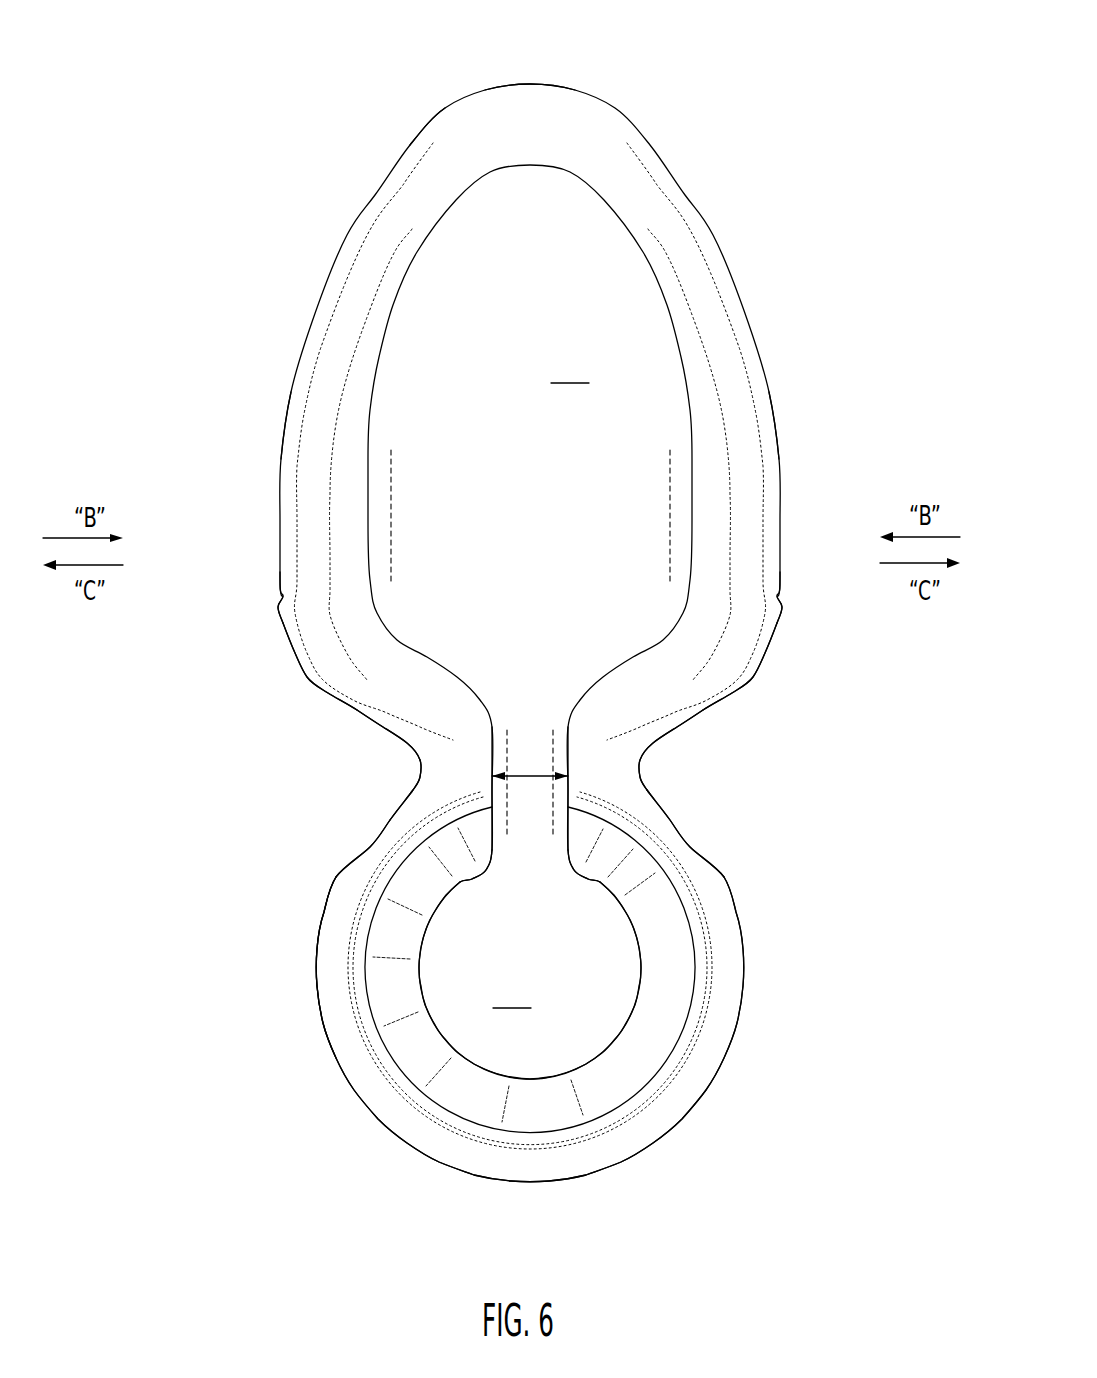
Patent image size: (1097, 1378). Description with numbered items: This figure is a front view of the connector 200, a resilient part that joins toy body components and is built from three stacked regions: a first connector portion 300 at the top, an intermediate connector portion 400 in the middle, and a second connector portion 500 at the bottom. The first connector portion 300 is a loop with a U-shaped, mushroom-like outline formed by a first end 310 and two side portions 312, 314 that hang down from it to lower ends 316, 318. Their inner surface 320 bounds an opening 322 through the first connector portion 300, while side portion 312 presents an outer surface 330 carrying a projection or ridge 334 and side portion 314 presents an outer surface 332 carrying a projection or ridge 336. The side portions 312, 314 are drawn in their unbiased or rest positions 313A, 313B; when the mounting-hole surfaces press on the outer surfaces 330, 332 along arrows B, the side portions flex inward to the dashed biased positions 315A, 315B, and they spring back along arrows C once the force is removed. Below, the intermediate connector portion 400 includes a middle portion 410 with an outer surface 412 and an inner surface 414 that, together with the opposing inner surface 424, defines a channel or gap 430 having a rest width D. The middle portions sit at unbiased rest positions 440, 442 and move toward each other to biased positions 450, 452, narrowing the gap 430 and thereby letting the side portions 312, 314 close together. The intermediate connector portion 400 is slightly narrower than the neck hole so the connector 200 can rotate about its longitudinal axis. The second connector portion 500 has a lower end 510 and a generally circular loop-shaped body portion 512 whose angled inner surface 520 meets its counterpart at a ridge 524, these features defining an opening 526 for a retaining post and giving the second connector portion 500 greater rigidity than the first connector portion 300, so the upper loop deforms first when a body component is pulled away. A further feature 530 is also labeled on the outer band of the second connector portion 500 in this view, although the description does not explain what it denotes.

The connector 200 is at (776, 104).
The first connector portion 300 is at (742, 280).
The first end 310 is at (563, 85).
The side portion 312 is at (303, 383).
The unbiased or rest position 313A is at (274, 414).
The unbiased or rest position 313B is at (792, 393).
The side portion 314 is at (765, 367).
The biased position 315A is at (405, 476).
The biased position 315B is at (658, 506).
The lower end 316 is at (323, 678).
The lower end 318 is at (690, 671).
The inner surface 320 is at (384, 347).
The opening 322 is at (570, 368).
The outer surface 330 is at (270, 468).
The outer surface 332 is at (792, 441).
The projection or ridge 334 is at (293, 613).
The projection or ridge 336 is at (772, 617).
The intermediate connector portion 400 is at (714, 756).
The middle portion 410 is at (428, 778).
The outer surface 412 is at (417, 762).
The inner surface 414 is at (491, 730).
The inner surface 424 is at (568, 730).
The channel or gap 430 is at (506, 645).
The unbiased or rest position 440 is at (336, 817).
The unbiased or rest position 442 is at (702, 795).
The biased position 450 is at (501, 868).
The biased position 452 is at (551, 868).
The second connector portion 500 is at (738, 995).
The lower end 510 is at (500, 1155).
The body portion 512 is at (337, 990).
The angled inner surface 520 is at (574, 1091).
The ridge 524 is at (620, 1031).
The opening 526 is at (512, 993).
The stitching of second loop 530 is at (743, 1076).